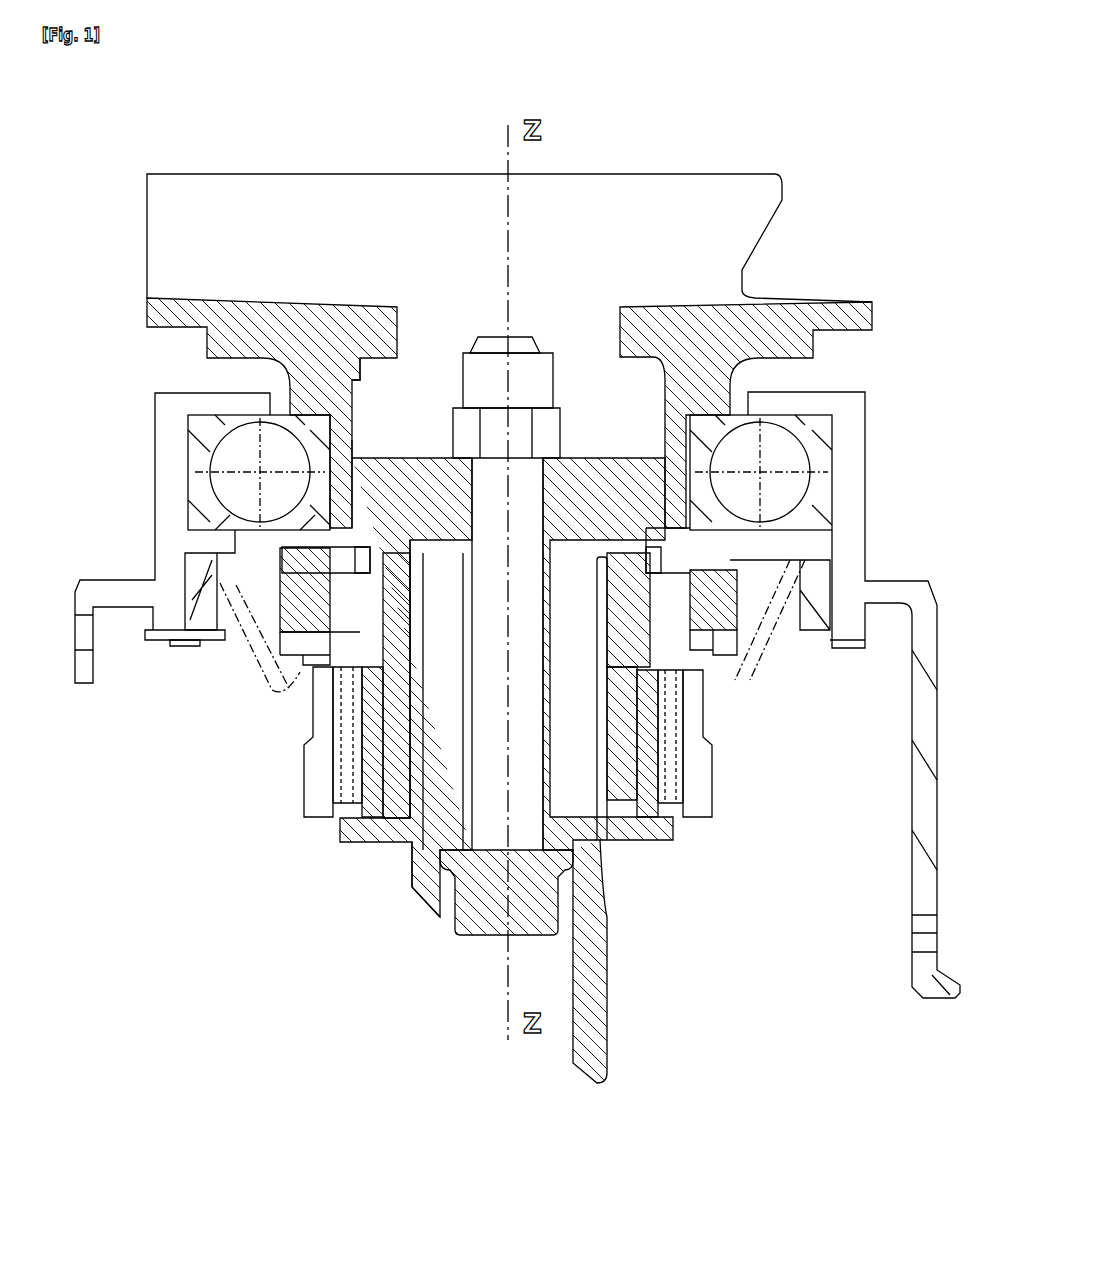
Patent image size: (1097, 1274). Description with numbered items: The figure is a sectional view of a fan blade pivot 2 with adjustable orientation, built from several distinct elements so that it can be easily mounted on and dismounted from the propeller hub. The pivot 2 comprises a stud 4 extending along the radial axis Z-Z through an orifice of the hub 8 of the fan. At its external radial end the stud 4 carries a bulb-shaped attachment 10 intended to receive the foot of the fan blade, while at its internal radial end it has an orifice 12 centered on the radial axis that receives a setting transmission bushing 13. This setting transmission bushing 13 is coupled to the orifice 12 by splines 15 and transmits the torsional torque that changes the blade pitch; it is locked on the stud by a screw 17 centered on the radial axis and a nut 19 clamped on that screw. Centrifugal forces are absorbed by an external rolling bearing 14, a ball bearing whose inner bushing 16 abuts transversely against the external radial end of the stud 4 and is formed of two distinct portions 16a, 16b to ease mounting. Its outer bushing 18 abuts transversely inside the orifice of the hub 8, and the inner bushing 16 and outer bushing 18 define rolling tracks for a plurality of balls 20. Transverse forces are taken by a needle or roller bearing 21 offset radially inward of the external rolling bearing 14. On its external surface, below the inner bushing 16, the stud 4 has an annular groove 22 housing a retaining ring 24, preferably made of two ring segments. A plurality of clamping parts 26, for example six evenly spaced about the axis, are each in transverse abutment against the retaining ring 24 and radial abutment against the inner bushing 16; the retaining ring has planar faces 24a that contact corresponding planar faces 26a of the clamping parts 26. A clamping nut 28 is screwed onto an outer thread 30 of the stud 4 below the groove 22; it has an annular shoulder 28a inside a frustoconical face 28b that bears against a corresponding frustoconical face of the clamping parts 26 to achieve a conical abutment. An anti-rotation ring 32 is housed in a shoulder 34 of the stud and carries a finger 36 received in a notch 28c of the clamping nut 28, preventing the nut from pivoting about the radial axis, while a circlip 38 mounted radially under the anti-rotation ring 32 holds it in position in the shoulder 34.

The pivot 2 is at (117, 438).
The stud 4 is at (670, 938).
The hub 8 is at (862, 513).
The bulb-shaped attachment 10 is at (718, 198).
The orifice 12 is at (590, 592).
The setting transmission bushing 13 is at (595, 1042).
The external rolling bearing 14 is at (800, 432).
The splines 15 is at (415, 748).
The inner bushing 16 is at (418, 447).
The first portion of inner bushing 16a is at (302, 430).
The second portion of inner bushing 16b is at (318, 507).
The screw 17 is at (478, 905).
The outer bushing 18 is at (200, 508).
The nut 19 is at (548, 378).
The balls 20 is at (235, 445).
The needle or roller bearing 21 is at (718, 802).
The annular groove 22 is at (650, 583).
The retaining ring 24 is at (360, 560).
The planar faces 24a is at (355, 557).
The clamping parts 26 is at (330, 548).
The planar face 26a is at (355, 545).
The clamping nut 28 is at (720, 583).
The annular shoulder 28a is at (712, 558).
The frustoconical face 28b is at (713, 560).
The notch 28c is at (690, 643).
The outer thread 30 is at (710, 607).
The anti-rotation ring 32 is at (693, 645).
The shoulder 34 is at (340, 655).
The finger 36 is at (303, 650).
The circlip 38 is at (330, 663).